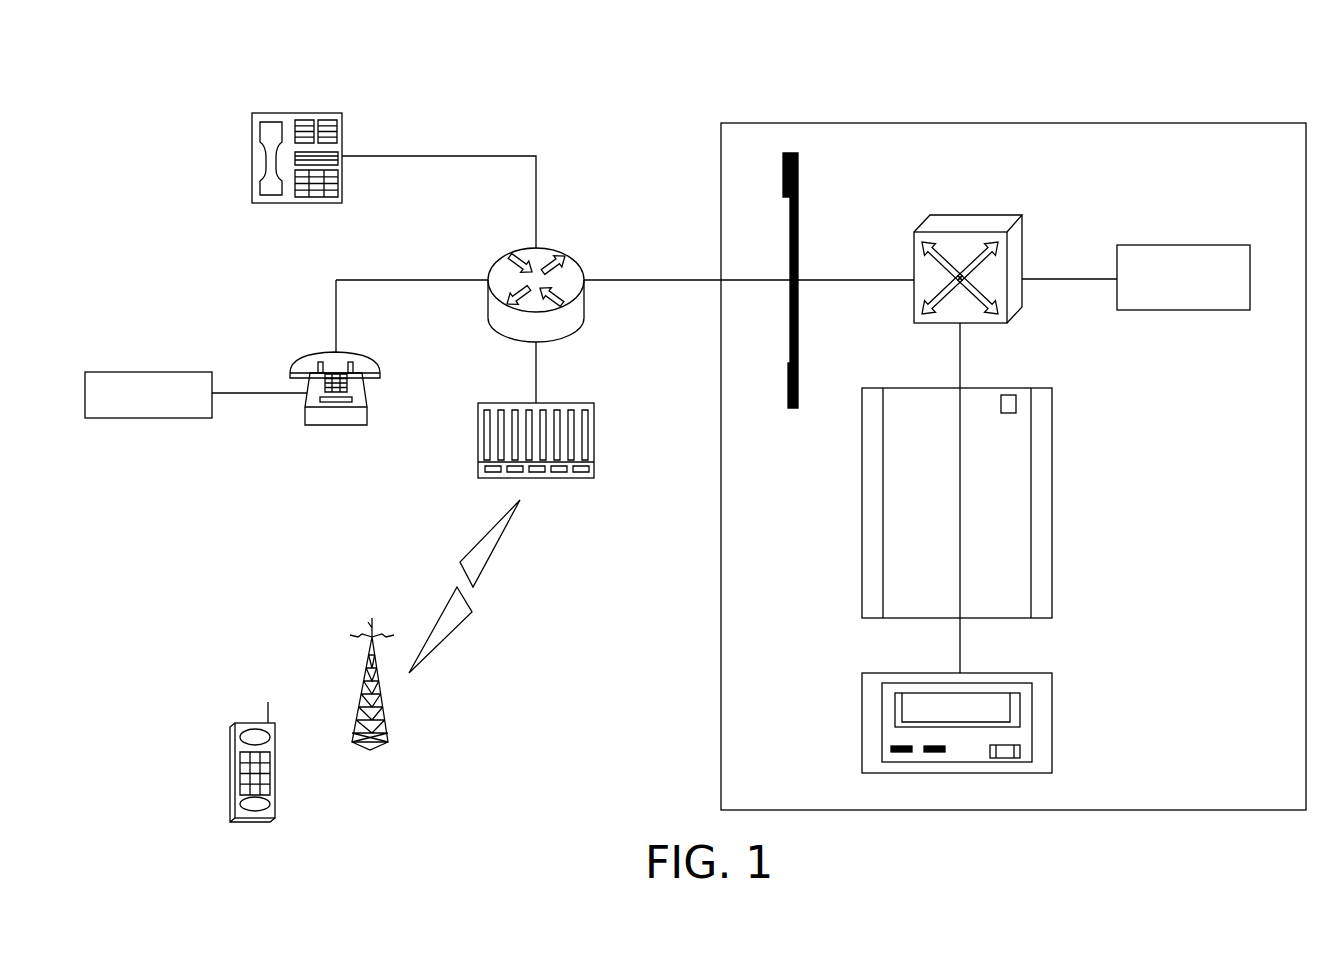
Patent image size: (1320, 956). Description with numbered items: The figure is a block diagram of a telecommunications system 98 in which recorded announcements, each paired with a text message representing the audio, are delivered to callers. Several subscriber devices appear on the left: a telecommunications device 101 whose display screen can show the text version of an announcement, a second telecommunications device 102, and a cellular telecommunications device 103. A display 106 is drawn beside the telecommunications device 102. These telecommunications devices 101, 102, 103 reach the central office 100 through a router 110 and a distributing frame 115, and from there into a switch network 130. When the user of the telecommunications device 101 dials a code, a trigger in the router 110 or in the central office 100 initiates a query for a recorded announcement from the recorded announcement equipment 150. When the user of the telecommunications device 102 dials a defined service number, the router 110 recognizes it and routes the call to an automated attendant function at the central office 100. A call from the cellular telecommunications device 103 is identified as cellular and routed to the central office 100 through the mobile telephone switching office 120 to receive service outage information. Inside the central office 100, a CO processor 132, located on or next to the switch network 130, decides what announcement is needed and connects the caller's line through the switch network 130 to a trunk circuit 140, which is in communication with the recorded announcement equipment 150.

The telecommunications system 98 is at (1080, 42).
The central office 100 is at (1195, 123).
The telecommunications device 101 is at (298, 113).
The telecommunications device 102 is at (300, 357).
The telecommunications device 103 is at (230, 770).
The display 106 is at (133, 418).
The router 110 is at (568, 254).
The distributing frame 115 is at (798, 222).
The mobile telephone switching office 120 is at (566, 403).
The switch network 130 is at (975, 214).
The central office processor 132 is at (1185, 245).
The trunk circuit 140 is at (1047, 388).
The recorded announcement equipment 150 is at (1052, 722).